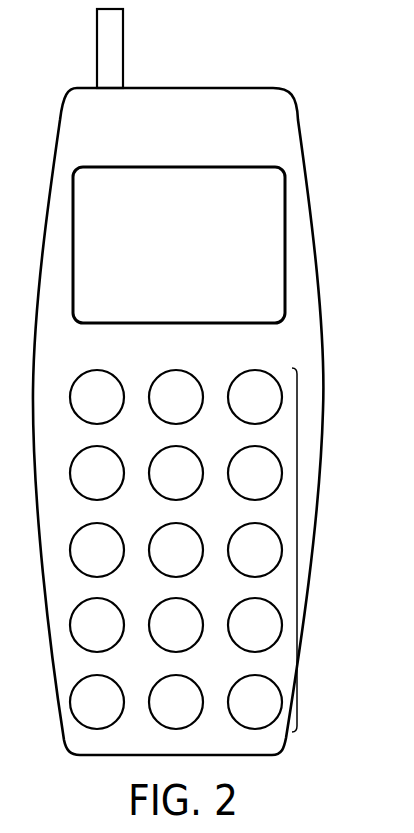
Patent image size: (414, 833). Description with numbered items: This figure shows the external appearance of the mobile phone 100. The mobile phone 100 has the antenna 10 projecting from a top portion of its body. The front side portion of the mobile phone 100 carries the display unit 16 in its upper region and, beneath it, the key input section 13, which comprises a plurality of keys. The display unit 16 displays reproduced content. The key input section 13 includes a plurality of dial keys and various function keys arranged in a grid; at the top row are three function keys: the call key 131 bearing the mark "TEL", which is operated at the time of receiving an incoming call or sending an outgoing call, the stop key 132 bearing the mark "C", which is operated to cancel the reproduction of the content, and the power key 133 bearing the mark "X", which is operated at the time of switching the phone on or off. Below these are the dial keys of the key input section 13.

The antenna 10 is at (123, 47).
The display unit 16 is at (285, 207).
The mobile phone 100 is at (323, 362).
The key input section 13 is at (297, 548).
The call key 131 is at (98, 370).
The stop key 132 is at (177, 370).
The power key 133 is at (256, 370).